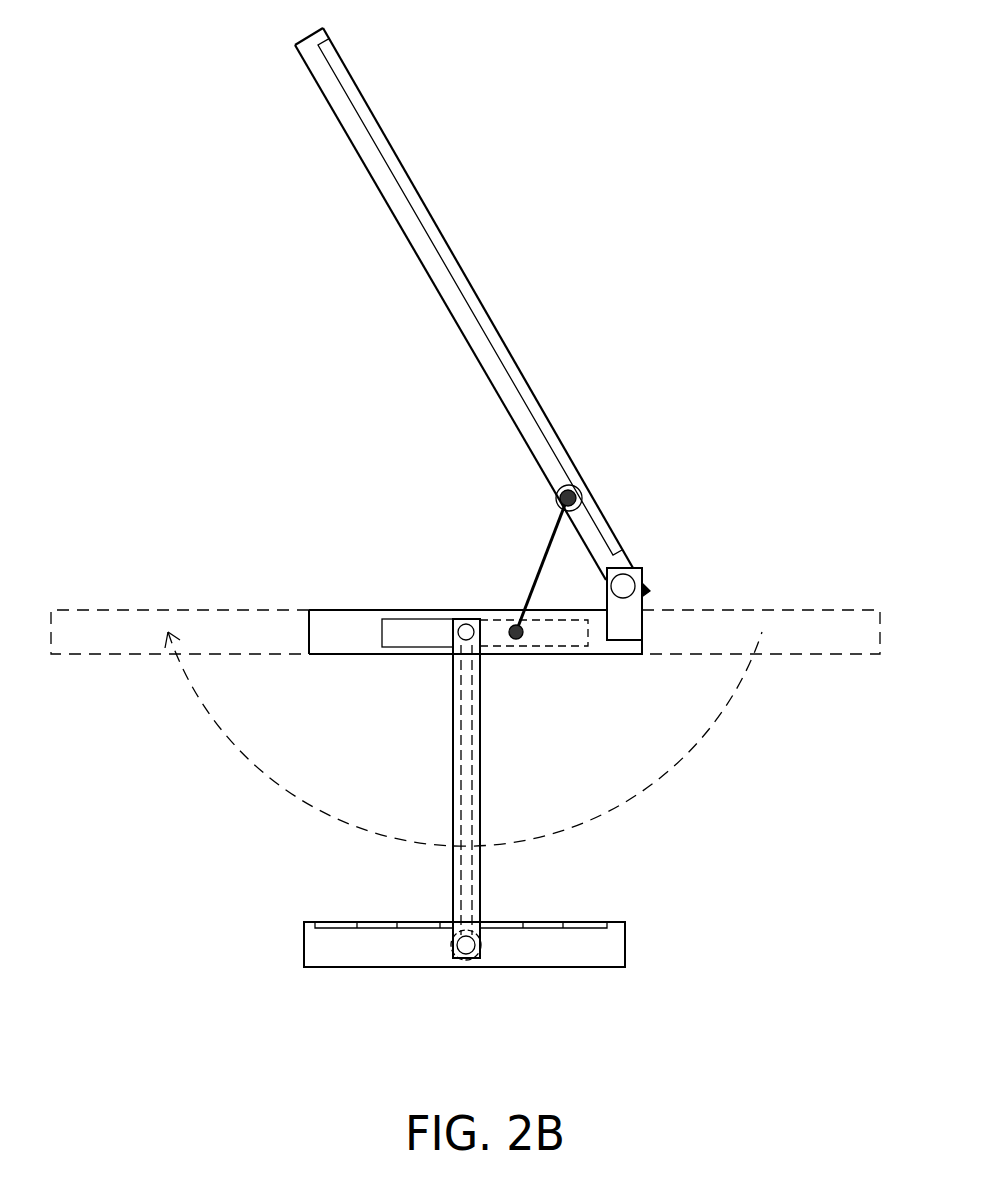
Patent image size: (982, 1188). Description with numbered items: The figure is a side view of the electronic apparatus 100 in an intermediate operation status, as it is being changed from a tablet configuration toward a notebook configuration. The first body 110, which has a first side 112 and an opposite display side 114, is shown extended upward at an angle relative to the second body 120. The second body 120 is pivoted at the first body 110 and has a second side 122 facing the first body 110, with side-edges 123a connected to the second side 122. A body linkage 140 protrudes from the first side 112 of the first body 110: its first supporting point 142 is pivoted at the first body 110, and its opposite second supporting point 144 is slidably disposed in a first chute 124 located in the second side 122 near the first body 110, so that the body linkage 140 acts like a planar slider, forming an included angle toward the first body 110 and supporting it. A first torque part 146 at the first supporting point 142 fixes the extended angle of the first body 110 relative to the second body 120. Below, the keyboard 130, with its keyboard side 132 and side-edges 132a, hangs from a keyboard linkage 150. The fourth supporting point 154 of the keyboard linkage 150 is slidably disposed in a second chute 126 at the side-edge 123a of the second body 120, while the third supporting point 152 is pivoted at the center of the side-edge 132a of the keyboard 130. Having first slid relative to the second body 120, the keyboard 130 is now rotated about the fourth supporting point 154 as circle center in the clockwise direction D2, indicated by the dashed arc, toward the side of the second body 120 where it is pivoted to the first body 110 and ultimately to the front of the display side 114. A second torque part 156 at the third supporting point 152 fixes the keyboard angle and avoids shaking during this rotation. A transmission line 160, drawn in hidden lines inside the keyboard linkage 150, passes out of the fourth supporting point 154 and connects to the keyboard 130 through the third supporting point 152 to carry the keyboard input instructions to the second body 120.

The electronic apparatus 100 is at (527, 67).
The first body 110 is at (298, 47).
The first side 112 is at (346, 135).
The display side 114 is at (380, 123).
The second body 120 is at (341, 648).
The second side 122 is at (408, 608).
The side-edge of the second body 123a is at (359, 631).
The first chute 124 is at (579, 648).
The second chute 126 is at (393, 647).
The keyboard 130 is at (405, 952).
The keyboard side 132 is at (414, 921).
The side-edge of the keyboard 132a is at (361, 951).
The body linkage 140 is at (551, 534).
The first supporting point 142 is at (572, 484).
The second supporting point 144 is at (516, 642).
The first torque part 146 is at (558, 498).
The keyboard linkage 150 is at (475, 802).
The third supporting point 152 is at (467, 955).
The fourth supporting point 154 is at (466, 626).
The second torque part 156 is at (481, 936).
The transmission line 160 is at (479, 762).
The clockwise direction D2 is at (463, 739).